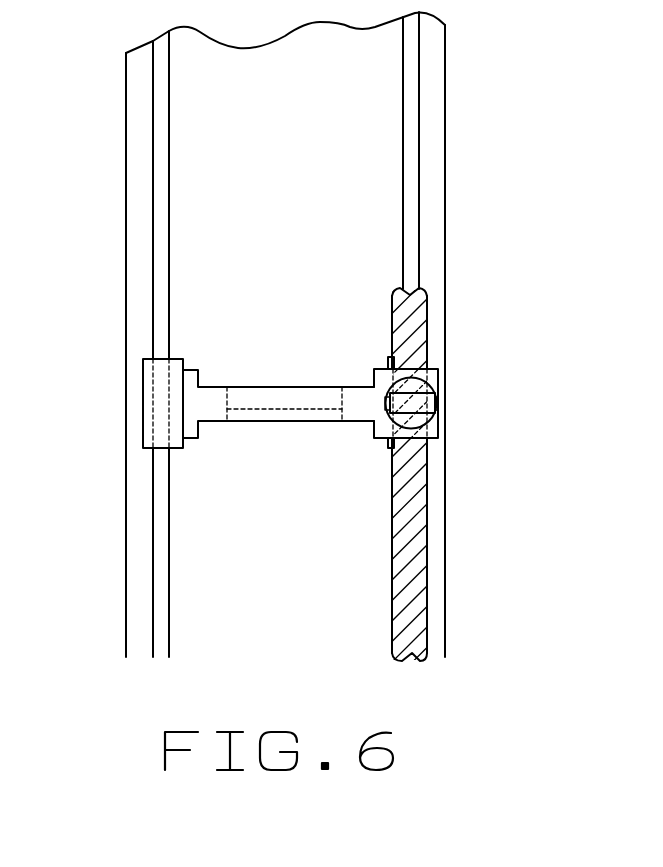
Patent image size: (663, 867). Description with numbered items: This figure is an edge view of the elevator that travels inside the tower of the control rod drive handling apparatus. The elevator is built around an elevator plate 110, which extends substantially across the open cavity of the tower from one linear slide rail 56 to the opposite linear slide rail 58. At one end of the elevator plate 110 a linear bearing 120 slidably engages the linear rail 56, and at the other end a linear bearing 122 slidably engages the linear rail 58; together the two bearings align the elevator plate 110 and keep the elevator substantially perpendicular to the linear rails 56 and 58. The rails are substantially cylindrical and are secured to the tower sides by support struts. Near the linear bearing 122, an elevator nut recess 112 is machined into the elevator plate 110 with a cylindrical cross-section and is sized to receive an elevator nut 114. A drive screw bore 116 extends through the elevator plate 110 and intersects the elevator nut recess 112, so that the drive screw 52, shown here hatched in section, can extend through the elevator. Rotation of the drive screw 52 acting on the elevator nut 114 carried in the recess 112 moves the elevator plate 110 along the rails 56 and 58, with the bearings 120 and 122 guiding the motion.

The drive screw 52 is at (407, 323).
The linear slide rail 56 is at (170, 271).
The linear slide rail 58 is at (403, 230).
The elevator plate 110 is at (226, 418).
The elevator nut recess 112 is at (384, 402).
The elevator nut 114 is at (424, 402).
The drive screw bore 116 is at (389, 359).
The linear bearing 120 is at (152, 404).
The linear bearing 122 is at (390, 442).